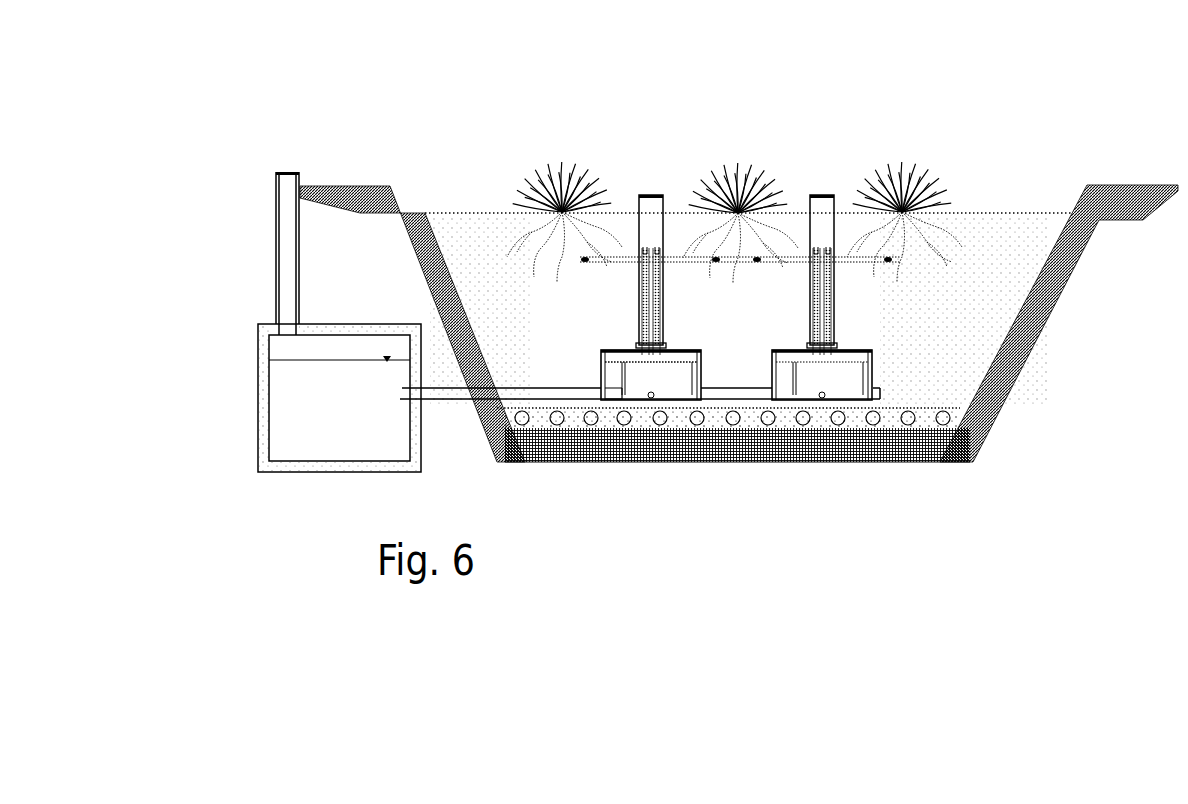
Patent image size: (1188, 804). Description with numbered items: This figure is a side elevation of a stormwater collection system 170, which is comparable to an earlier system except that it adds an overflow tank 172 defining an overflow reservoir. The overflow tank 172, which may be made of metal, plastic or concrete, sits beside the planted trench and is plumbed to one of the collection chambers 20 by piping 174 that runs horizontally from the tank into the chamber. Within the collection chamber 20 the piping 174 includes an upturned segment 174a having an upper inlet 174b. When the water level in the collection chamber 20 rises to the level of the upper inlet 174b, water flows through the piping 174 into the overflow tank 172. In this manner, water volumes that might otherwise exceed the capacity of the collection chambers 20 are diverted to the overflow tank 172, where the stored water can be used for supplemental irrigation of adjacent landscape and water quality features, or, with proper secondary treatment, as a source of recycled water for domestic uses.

The system 170 is at (1015, 130).
The overflow tank 172 is at (267, 410).
The piping 174 is at (482, 400).
The upturned segment 174a is at (610, 380).
The upper inlet 174b is at (613, 362).
The collection chamber 20 is at (776, 367).